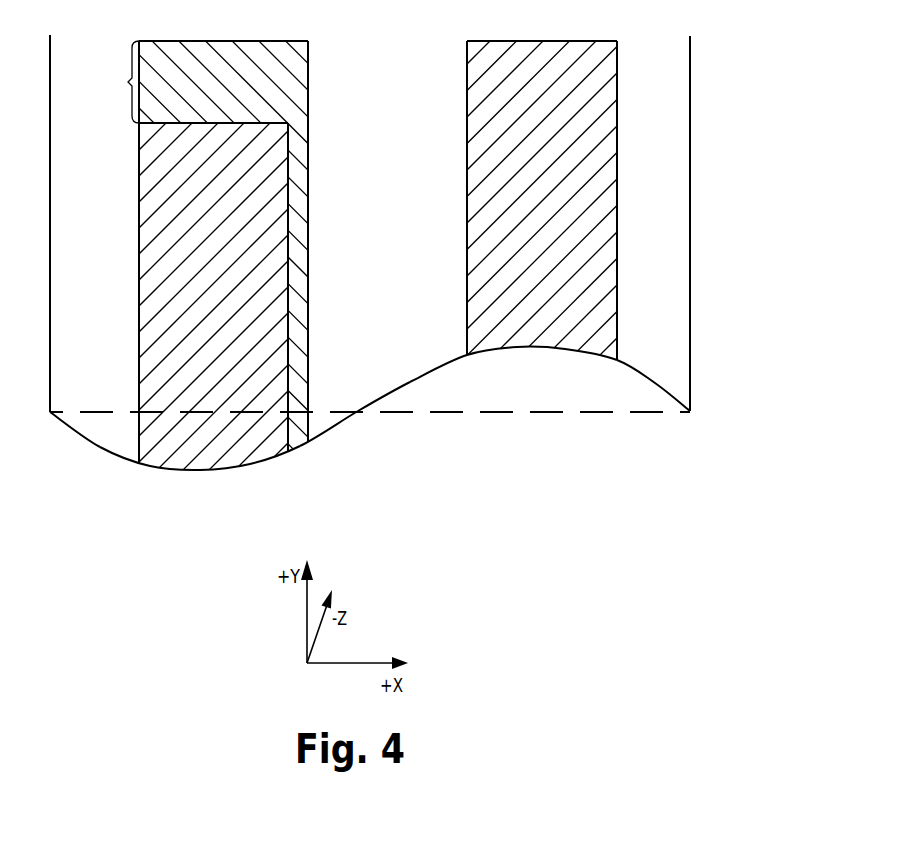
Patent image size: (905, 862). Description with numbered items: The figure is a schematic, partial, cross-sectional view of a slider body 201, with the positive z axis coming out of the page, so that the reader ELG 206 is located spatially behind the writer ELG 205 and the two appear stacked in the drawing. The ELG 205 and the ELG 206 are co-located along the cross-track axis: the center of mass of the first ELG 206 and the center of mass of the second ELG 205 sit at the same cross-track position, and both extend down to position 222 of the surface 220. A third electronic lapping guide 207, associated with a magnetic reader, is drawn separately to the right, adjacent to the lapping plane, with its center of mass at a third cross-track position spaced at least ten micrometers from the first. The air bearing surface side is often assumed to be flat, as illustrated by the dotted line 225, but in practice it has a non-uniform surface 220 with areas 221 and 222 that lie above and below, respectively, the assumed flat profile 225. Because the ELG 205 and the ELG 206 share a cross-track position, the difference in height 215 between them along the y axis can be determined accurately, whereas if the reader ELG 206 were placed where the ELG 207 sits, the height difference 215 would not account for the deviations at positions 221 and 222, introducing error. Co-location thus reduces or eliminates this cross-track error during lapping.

The slider body 201 is at (712, 90).
The writer ELG 205 is at (268, 190).
The reader ELG 206 is at (270, 76).
The third electronic lapping guide 207 is at (588, 82).
The difference in height 215 is at (118, 82).
The non-uniform surface 220 is at (392, 437).
The area above assumed flat profile 221 is at (518, 348).
The area below assumed flat profile 222 is at (205, 471).
The assumed flat profile 225 is at (585, 414).